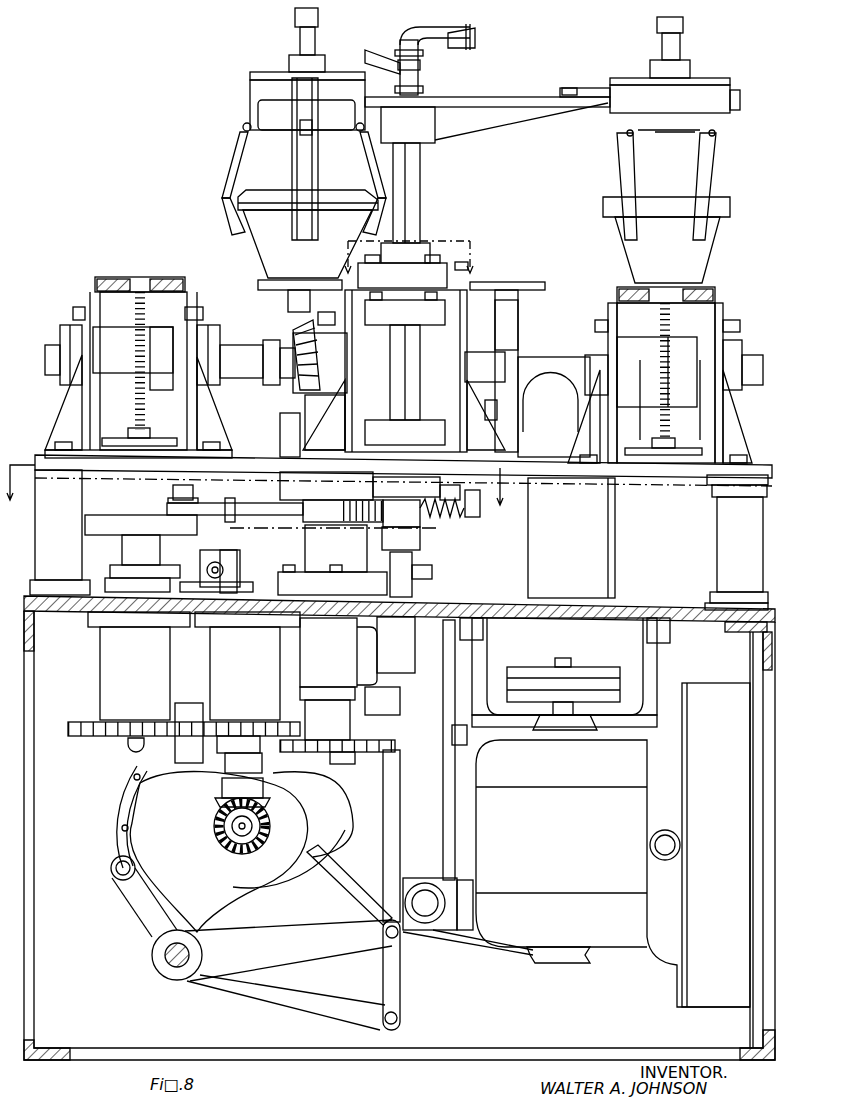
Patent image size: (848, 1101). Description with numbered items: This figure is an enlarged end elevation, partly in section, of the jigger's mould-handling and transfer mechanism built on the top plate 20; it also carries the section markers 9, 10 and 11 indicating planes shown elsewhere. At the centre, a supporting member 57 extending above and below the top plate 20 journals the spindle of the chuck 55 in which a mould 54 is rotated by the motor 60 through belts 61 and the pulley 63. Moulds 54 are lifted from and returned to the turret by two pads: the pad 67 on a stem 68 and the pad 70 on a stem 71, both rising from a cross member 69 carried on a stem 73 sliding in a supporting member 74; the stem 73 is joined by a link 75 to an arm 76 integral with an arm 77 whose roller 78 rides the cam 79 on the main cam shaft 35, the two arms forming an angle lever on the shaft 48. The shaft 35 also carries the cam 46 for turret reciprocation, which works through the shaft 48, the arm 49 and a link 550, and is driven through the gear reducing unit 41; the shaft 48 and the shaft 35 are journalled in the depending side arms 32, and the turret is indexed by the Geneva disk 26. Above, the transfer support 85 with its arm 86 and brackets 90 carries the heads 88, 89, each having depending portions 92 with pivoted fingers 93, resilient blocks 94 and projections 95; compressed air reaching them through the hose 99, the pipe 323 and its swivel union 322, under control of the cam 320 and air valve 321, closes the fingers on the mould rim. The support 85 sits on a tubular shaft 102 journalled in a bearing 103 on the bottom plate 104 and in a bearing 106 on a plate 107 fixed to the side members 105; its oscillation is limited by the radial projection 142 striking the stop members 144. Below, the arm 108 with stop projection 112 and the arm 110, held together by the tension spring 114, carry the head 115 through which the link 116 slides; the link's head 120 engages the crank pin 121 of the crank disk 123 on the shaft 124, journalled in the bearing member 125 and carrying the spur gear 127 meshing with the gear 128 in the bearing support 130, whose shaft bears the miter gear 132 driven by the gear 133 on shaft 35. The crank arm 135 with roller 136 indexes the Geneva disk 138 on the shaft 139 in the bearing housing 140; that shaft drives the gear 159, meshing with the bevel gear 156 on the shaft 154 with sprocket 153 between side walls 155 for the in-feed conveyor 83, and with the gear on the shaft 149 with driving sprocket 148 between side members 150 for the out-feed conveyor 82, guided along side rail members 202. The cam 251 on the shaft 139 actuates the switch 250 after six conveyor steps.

The section line 9 is at (409, 264).
The section line 10 is at (298, 520).
The section line 11 is at (263, 492).
The top plate 20 is at (492, 602).
The Geneva disk 26 is at (412, 744).
The side arms 32 is at (193, 710).
The main cam shaft 35 is at (220, 832).
The gear reducing unit 41 is at (164, 774).
The cam 46 is at (296, 830).
The shaft 48 is at (158, 968).
The arm 49 is at (286, 1002).
The mould 54 is at (484, 236).
The chuck 55 is at (554, 407).
The supporting member 57 is at (399, 540).
The motor 60 is at (613, 845).
The belts 61 is at (500, 680).
The pulley 63 is at (535, 666).
The pad 67 is at (524, 278).
The stem 68 is at (494, 325).
The cross member 69 is at (280, 420).
The pad 70 is at (286, 285).
The stem 71 is at (294, 326).
The stem 73 is at (403, 664).
The supporting member 74 is at (416, 590).
The link 75 is at (380, 832).
The arm 76 is at (288, 950).
The arm 77 is at (138, 918).
The roller 78 is at (112, 868).
The cam 79 is at (218, 851).
The out-feed conveyor 82 is at (708, 287).
The in-feed conveyor 83 is at (116, 278).
The cross member support 85 is at (440, 101).
The arm 86 is at (562, 94).
The circular shaped member 88 is at (733, 90).
The circular shaped member 89 is at (250, 92).
The brackets 90 is at (578, 88).
The depending portions 92 is at (246, 115).
The fingers 93 is at (354, 166).
The blocks 94 is at (230, 193).
The projections 95 is at (340, 132).
The hose 99 is at (398, 54).
The tubular shaft 102 is at (420, 182).
The bearing 103 is at (426, 416).
The bottom plate 104 is at (348, 444).
The side members 105 is at (346, 384).
The bearing 106 is at (434, 320).
The plate 107 is at (456, 270).
The arm 108 is at (452, 471).
The arm 110 is at (406, 487).
The stop projection 112 is at (455, 494).
The helical tension spring 114 is at (460, 516).
The head 115 is at (401, 513).
The link 116 is at (276, 514).
The head 120 is at (202, 498).
The crank pin 121 is at (176, 492).
The crank disk 123 is at (141, 540).
The shaft 124 is at (116, 560).
The bearing member 125 is at (139, 682).
The spur gear 127 is at (84, 720).
The spur gear 128 is at (262, 720).
The bearing support 130 is at (247, 666).
The miter gear 132 is at (222, 800).
The miter gear 133 is at (262, 828).
The crank arm 135 is at (276, 754).
The roller 136 is at (216, 746).
The Geneva disk 138 is at (348, 758).
The shaft 139 is at (346, 359).
The bearing housing 140 is at (332, 679).
The radial projection 142 is at (435, 271).
The stop members 144 is at (402, 271).
The driving sprocket 148 is at (658, 422).
The shaft 149 is at (581, 372).
The side members 150 is at (616, 402).
The sprocket 153 is at (139, 410).
The shaft 154 is at (133, 350).
The side walls 155 is at (88, 394).
The bevel gear 156 is at (276, 382).
The gear 159 is at (330, 316).
The side rail members 202 is at (616, 331).
The switch 250 is at (366, 702).
The cam 251 is at (346, 676).
The cam 320 is at (199, 556).
The air valve 321 is at (220, 551).
The swivel union 322 is at (420, 546).
The pipe 323 is at (422, 76).
The link 550 is at (397, 984).